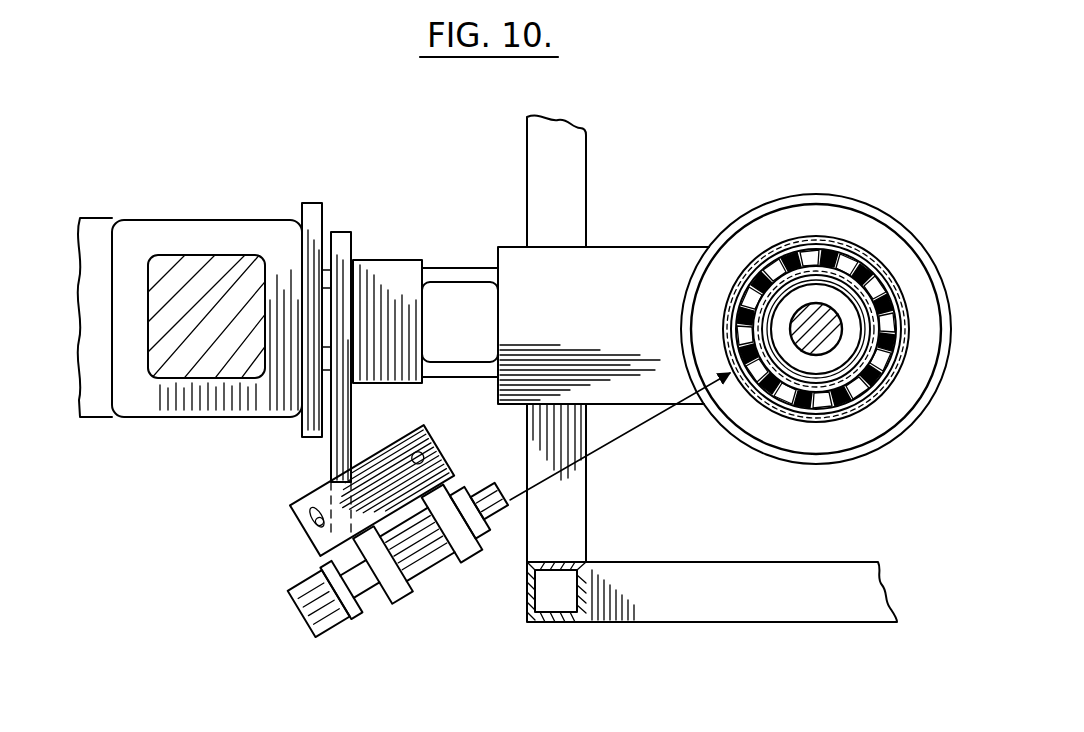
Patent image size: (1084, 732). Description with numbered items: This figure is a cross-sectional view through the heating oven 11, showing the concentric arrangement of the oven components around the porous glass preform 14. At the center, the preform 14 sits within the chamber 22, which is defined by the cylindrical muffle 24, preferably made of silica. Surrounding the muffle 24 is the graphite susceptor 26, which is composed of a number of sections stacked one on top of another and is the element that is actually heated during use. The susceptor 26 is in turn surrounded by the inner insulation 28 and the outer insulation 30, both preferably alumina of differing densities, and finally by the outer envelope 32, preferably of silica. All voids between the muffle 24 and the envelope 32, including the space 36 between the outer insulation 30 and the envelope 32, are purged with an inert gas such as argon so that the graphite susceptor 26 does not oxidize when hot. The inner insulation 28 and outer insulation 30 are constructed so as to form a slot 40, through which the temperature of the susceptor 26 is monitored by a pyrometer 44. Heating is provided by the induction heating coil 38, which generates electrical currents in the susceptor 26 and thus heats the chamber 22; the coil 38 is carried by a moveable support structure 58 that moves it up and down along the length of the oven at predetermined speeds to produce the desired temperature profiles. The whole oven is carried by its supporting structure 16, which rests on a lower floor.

The apparatus 11 is at (466, 615).
The porous glass preform 14 is at (842, 323).
The supporting structure 16 is at (675, 605).
The chamber 22 is at (836, 300).
The cylindrical muffle 24 is at (783, 277).
The graphite susceptor 26 is at (848, 412).
The inner insulation 28 is at (872, 390).
The outer insulation 30 is at (803, 413).
The outer envelope 32 is at (835, 238).
The space 36 is at (824, 412).
The induction heating coil 38 is at (708, 230).
The slot 40 is at (738, 382).
The pyrometer 44 is at (356, 630).
The moveable support structure 58 is at (411, 204).